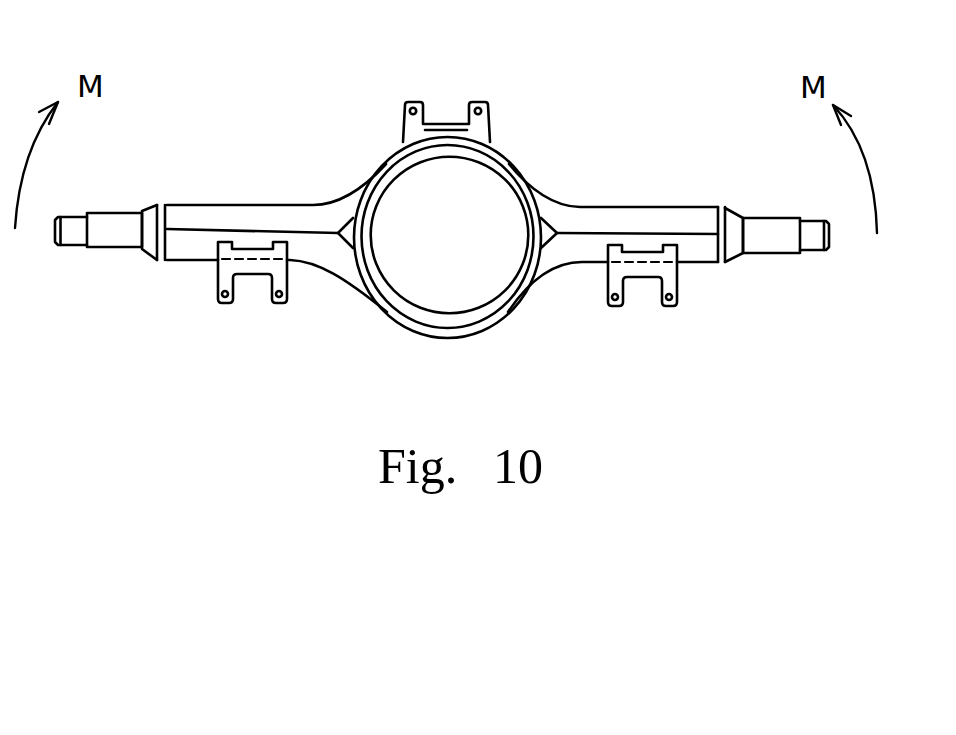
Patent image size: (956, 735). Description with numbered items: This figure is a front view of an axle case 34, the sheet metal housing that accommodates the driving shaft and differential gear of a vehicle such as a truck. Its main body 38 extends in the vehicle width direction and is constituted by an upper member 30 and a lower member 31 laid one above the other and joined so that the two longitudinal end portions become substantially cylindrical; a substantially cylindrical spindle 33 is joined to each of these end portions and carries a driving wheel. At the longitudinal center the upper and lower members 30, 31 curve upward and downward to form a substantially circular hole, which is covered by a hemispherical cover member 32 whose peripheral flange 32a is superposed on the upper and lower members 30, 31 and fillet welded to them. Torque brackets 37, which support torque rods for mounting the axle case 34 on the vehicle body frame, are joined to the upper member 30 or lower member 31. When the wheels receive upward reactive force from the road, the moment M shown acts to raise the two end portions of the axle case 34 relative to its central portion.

The upper member 30 is at (569, 198).
The lower member 31 is at (553, 278).
The cover member 32 is at (408, 278).
The flange 32a is at (377, 190).
The spindle 33 is at (122, 228).
The axle case 34 is at (333, 75).
The torque bracket 37 is at (490, 123).
The main body 38 is at (250, 203).